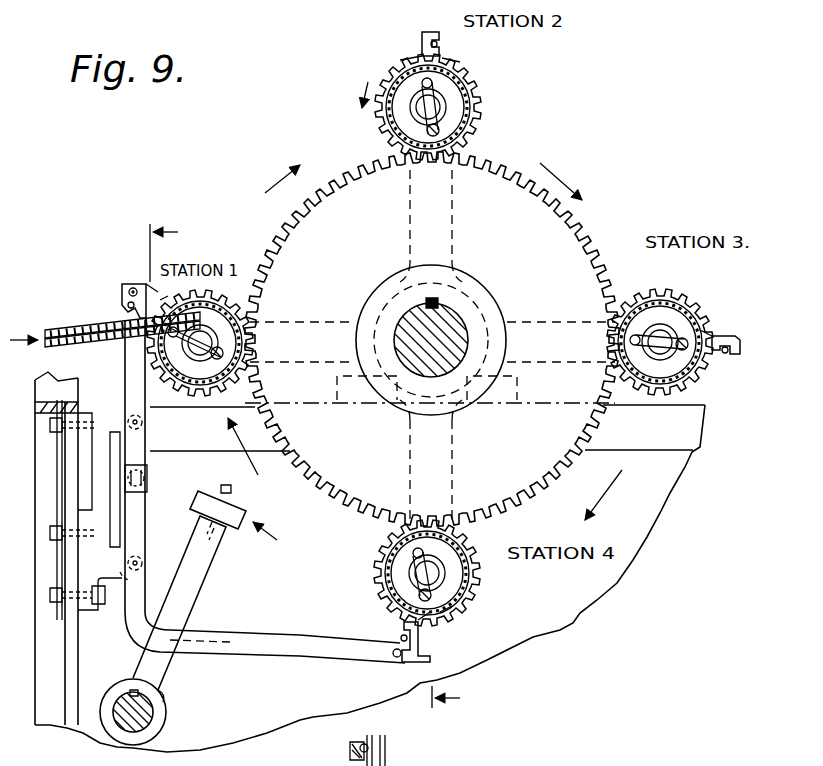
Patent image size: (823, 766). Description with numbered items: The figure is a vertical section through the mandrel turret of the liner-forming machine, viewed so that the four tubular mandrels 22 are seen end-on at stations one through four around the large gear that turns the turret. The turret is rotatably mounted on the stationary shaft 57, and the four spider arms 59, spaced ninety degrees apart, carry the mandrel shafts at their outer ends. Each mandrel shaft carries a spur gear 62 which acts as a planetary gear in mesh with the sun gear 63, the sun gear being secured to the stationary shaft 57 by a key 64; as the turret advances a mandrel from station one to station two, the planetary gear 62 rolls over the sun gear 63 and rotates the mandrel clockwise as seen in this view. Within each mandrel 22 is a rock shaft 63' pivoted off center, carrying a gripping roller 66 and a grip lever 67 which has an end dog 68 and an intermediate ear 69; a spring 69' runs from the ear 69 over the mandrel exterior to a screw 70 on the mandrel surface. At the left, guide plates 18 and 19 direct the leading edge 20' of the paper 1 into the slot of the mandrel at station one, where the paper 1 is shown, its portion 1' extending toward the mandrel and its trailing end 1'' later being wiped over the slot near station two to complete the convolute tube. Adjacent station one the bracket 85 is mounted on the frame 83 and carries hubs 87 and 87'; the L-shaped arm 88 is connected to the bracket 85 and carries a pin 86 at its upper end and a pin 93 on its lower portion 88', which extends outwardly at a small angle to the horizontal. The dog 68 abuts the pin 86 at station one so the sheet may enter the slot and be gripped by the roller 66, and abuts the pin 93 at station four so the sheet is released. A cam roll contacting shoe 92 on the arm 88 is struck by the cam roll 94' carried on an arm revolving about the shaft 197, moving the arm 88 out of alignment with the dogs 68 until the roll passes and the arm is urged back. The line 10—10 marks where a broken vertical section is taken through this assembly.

The paper 1 is at (130, 315).
The strip portion at station 1' is at (571, 469).
The trailing end of the paper wrapper 1'' is at (379, 102).
The section line 10— 10 is at (318, 467).
The guide plate 18 is at (52, 332).
The guide plate 19 is at (55, 348).
The leading edge of the paper 20' is at (430, 327).
The tubular mandrel 22 is at (380, 150).
The stationary shaft 57 is at (402, 316).
The spider arms 59 is at (454, 222).
The spur gear 62 is at (376, 112).
The sun gear 63 is at (350, 215).
The rock shaft 63' is at (449, 362).
The key 64 is at (438, 302).
The roller 66 is at (392, 120).
The grip lever 67 is at (418, 52).
The end dog 68 is at (420, 36).
The intermediate ear 69 is at (443, 340).
The spring 69' is at (346, 335).
The screw 70 is at (468, 126).
The frame 83 is at (52, 724).
The bracket 85 is at (90, 560).
The pin 86 is at (132, 288).
The hub 87 is at (117, 403).
The hub 87' is at (149, 553).
The L-shaped arm 88 is at (254, 543).
The lower portion of arm 88' is at (265, 631).
The cam roll contacting shoe 92 is at (148, 472).
The pin 93 is at (392, 658).
The cam roll 94' is at (208, 593).
The shaft 197 is at (150, 712).